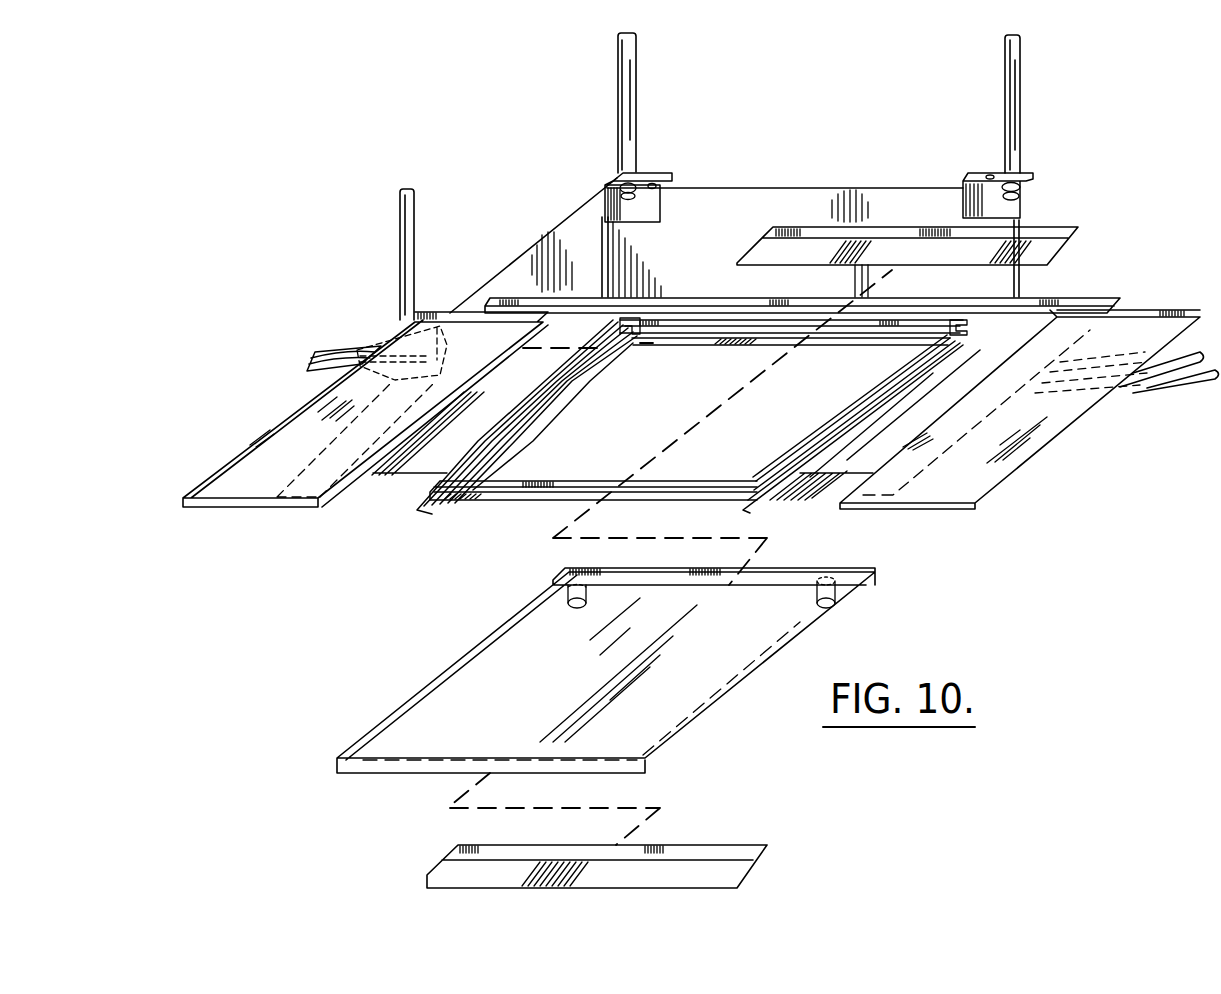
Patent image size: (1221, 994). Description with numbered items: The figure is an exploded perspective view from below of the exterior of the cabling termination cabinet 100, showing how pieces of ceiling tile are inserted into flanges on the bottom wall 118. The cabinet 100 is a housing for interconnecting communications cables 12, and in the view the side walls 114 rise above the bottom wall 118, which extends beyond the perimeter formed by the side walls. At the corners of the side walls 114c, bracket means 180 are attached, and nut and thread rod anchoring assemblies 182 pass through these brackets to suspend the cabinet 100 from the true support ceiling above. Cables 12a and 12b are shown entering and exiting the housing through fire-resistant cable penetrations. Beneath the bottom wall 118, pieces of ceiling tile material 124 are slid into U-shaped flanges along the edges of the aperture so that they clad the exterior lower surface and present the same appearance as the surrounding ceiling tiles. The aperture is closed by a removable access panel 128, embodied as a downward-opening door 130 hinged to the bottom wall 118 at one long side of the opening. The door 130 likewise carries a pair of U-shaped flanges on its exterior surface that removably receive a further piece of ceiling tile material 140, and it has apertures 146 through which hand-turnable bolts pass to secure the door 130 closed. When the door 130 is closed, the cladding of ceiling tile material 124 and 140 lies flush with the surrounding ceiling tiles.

The cabling termination cabinet 100 is at (768, 175).
The nut and thread rod anchoring assembly 182 is at (1012, 146).
The bracket means 180 is at (1020, 208).
The side wall 114 is at (577, 235).
The side wall 114c is at (725, 243).
The bottom wall 118 is at (1063, 298).
The ceiling tile material 124 is at (1076, 229).
The cable 12b is at (340, 347).
The communications cable 12 is at (295, 379).
The downward-opening door 130 is at (413, 523).
The removable access panel 128 is at (510, 470).
The ceiling tile material 140 is at (845, 612).
The aperture 146 is at (565, 590).
The cable 12a is at (1157, 387).